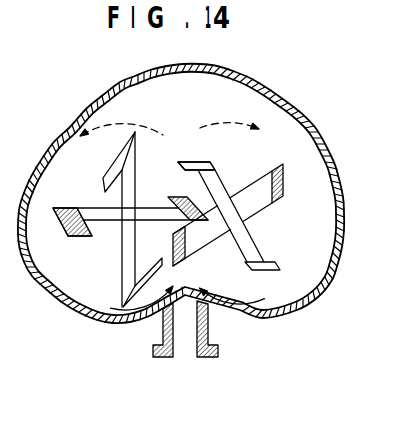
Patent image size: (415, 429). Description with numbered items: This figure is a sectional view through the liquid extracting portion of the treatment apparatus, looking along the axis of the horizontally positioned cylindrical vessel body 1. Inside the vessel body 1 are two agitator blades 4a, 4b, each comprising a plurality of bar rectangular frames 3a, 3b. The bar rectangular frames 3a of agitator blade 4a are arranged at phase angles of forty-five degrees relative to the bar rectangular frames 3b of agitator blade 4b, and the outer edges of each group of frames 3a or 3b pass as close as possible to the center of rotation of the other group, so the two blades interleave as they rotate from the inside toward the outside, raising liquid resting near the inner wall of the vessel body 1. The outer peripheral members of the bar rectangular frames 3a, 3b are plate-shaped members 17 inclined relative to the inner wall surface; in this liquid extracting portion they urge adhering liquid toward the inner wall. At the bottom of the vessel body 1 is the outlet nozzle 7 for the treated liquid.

The vessel body 1 is at (52, 142).
The bar rectangular frames 3a is at (107, 222).
The bar rectangular frames 3b is at (251, 237).
The agitator blade 4a is at (153, 207).
The agitator blade 4b is at (236, 240).
The outlet nozzle 7 is at (219, 348).
The plate-shaped members 17 is at (58, 208).